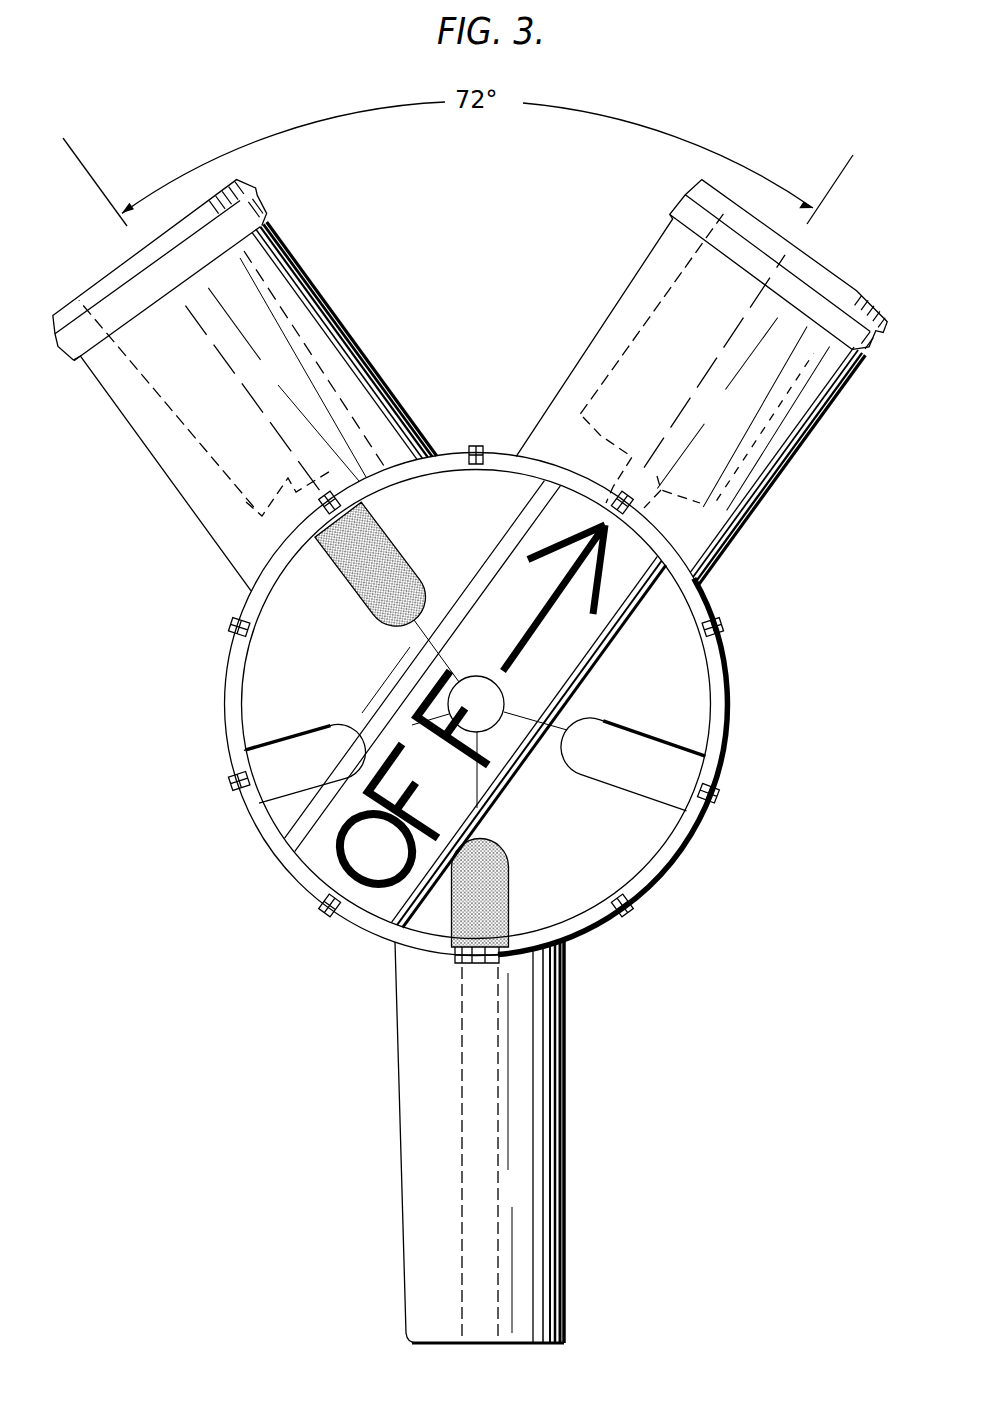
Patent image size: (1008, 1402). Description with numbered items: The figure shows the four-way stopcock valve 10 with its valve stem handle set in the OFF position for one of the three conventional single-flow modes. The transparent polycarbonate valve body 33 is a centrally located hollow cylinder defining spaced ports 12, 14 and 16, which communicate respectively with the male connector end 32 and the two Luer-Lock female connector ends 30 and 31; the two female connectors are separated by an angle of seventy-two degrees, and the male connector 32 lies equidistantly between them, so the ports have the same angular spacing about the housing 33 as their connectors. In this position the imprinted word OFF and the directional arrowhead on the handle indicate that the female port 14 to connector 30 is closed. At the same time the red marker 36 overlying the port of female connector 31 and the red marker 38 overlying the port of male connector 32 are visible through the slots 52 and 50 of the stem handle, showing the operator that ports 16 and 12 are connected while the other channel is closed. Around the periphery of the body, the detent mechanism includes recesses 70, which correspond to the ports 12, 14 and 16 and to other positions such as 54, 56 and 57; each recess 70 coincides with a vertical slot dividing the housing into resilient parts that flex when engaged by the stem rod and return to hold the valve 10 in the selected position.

The valve 10 is at (752, 883).
The port 12 is at (460, 957).
The port 14 is at (604, 503).
The port 16 is at (325, 513).
The Luer-Lock female connector end 30 is at (733, 550).
The Luer-Lock female connector end 31 is at (188, 512).
The male connector end 32 is at (570, 1058).
The valve body 33 is at (736, 759).
The red marker 36 is at (370, 582).
The red marker 38 is at (448, 907).
The slot 50 is at (504, 886).
The slot 52 is at (369, 561).
The position 54 is at (715, 788).
The position 56 is at (626, 918).
The position 57 is at (437, 913).
The recess 70 is at (322, 902).